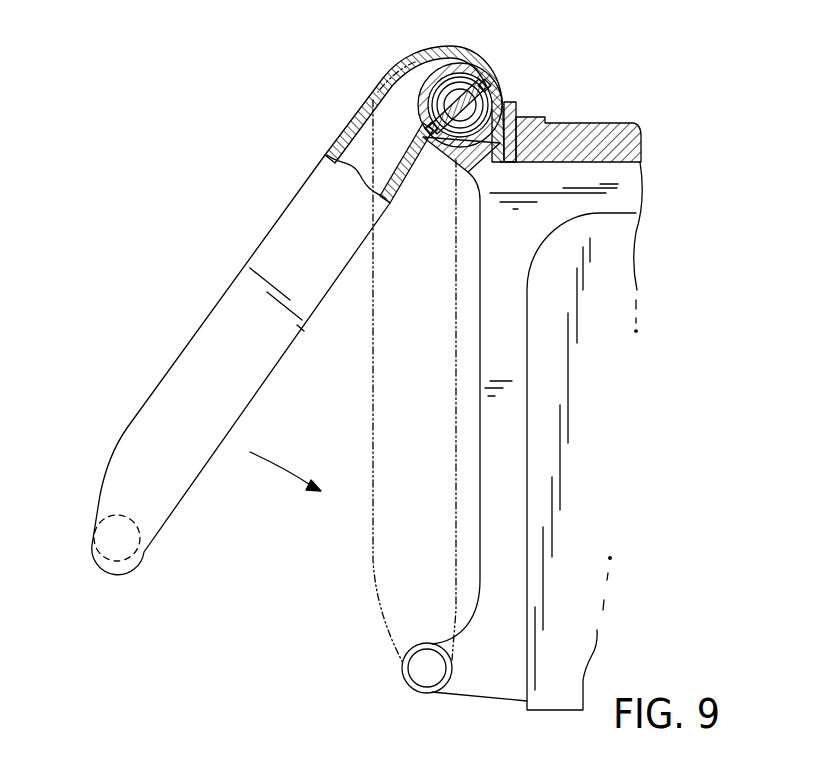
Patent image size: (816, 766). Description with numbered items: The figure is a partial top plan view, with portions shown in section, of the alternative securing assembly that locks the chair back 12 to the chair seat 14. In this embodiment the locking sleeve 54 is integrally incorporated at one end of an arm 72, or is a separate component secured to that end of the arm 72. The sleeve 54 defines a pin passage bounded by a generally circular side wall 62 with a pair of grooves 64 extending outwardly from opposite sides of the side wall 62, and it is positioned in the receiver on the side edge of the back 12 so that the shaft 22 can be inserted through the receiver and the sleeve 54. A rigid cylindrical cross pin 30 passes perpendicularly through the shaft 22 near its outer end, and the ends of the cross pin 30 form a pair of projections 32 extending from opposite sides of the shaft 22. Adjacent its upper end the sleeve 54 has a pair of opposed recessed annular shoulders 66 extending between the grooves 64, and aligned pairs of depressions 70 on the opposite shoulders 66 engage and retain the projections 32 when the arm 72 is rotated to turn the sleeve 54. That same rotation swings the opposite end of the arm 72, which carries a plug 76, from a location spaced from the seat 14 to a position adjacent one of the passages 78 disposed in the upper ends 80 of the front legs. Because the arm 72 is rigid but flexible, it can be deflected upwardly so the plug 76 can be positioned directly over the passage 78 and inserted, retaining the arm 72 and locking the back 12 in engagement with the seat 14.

The back section 12 is at (620, 108).
The seat section 14 is at (571, 598).
The shaft 22 is at (507, 103).
The cross pin 30 is at (463, 98).
The projections 32 is at (478, 88).
The locking sleeve 54 is at (440, 72).
The circular side wall 62 is at (474, 180).
The grooves 64 is at (425, 125).
The recessed annular shoulders 66 is at (392, 66).
The depressions 70 is at (412, 48).
The arm 72 is at (168, 320).
The plug 76 is at (106, 535).
The passages 78 is at (427, 648).
The upper ends 80 is at (411, 689).